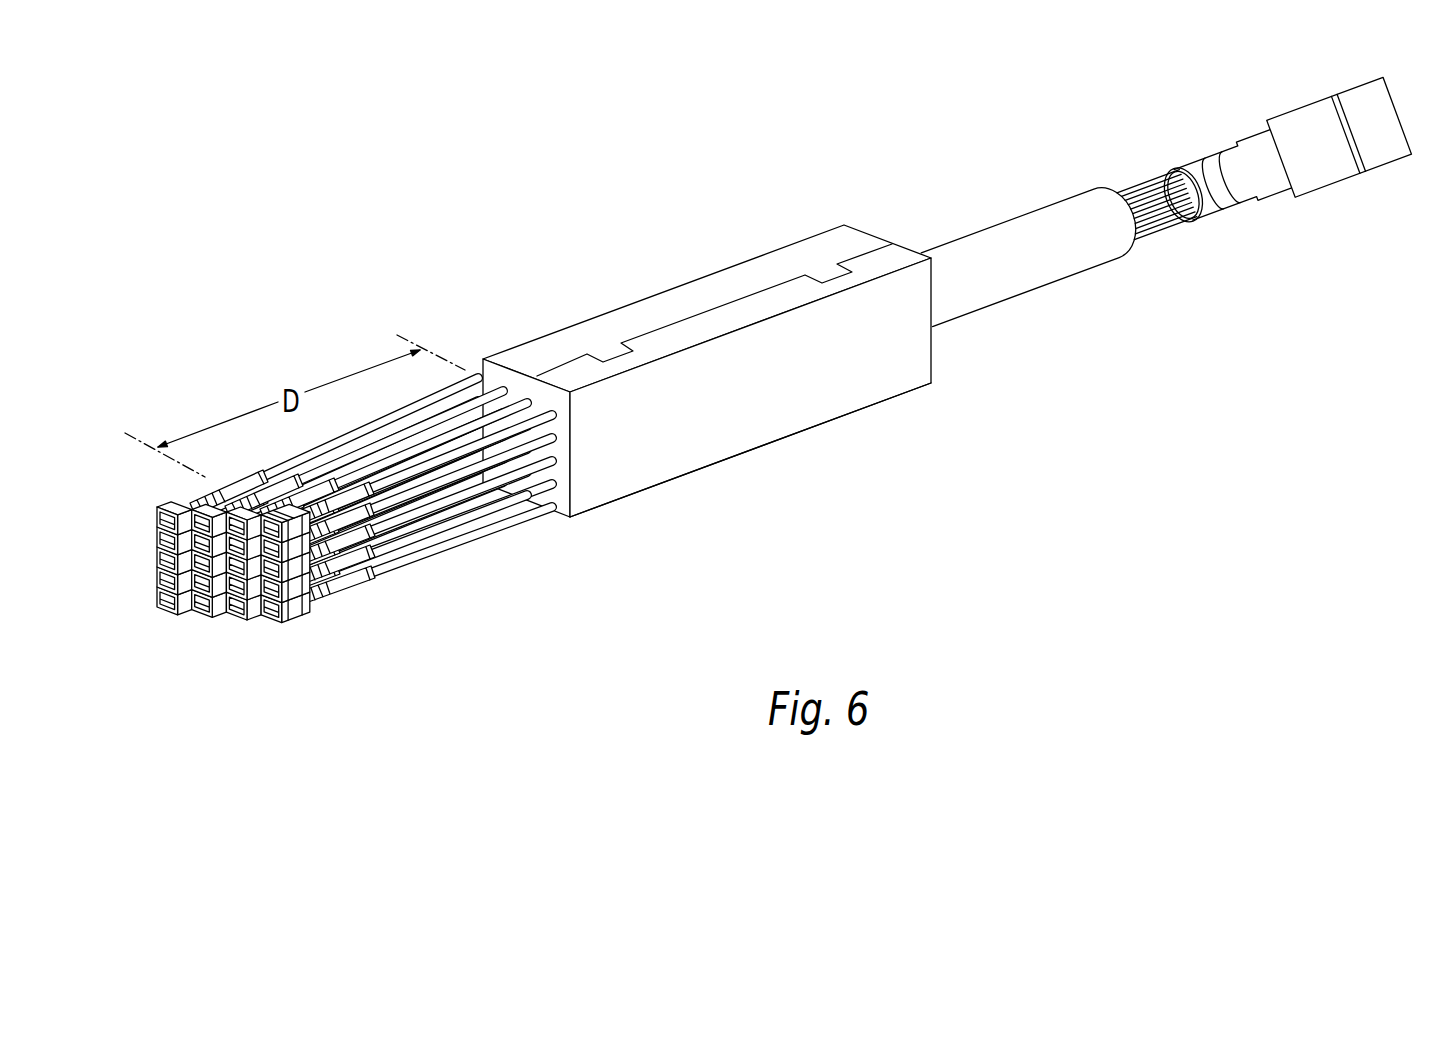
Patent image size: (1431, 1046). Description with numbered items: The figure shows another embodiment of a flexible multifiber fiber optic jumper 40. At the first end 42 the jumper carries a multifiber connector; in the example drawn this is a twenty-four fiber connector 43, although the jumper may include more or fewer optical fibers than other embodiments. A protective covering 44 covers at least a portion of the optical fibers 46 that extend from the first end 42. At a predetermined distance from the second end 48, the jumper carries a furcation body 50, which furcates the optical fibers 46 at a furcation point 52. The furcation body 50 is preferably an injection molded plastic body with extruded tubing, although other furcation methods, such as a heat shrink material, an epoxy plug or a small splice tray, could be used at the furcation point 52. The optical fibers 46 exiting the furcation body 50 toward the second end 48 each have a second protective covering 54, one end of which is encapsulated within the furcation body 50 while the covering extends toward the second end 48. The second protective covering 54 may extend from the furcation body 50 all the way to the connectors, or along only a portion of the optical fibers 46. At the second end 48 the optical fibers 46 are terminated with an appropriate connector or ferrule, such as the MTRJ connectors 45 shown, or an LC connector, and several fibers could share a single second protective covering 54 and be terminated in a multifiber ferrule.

The flexible multifiber fiber optic jumper 40 is at (707, 378).
The first end 42 is at (1178, 310).
The 24 fiber connector 43 is at (1298, 127).
The protective covering 44 is at (1033, 360).
The fiber optic connectors 45 is at (310, 653).
The optical fibers 46 is at (1147, 178).
The second end 48 is at (445, 633).
The furcation body 50 is at (750, 525).
The furcation point 52 is at (803, 550).
The second protective covering 54 is at (512, 567).